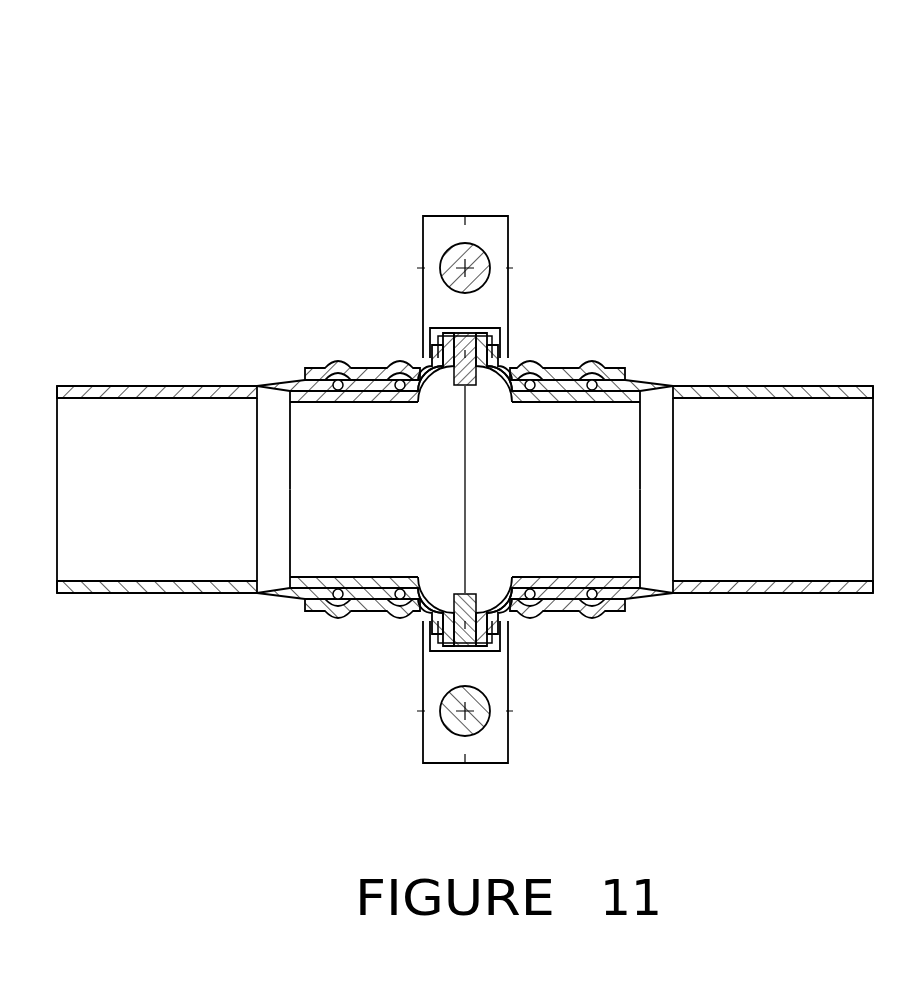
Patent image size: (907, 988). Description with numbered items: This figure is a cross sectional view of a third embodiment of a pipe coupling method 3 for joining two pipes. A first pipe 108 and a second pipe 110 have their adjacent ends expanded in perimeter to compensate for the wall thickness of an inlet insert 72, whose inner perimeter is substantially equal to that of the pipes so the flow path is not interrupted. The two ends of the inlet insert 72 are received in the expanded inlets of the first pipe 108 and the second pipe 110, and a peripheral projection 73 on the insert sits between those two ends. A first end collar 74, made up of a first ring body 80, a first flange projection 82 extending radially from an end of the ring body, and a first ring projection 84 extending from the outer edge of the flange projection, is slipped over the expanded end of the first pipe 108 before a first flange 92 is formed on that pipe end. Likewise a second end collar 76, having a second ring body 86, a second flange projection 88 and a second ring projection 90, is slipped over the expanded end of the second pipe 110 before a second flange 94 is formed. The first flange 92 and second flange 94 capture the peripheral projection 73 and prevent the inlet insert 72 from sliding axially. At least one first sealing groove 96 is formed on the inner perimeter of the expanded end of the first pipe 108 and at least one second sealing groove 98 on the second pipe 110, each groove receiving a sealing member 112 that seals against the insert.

The pipe coupling method 3 is at (231, 165).
The inlet insert 72 is at (330, 578).
The peripheral projection 73 is at (457, 653).
The first end collar 74 is at (297, 341).
The second end collar 76 is at (632, 341).
The first ring body 80 is at (399, 358).
The first flange projection 82 is at (437, 330).
The first ring projection 84 is at (456, 330).
The second ring body 86 is at (570, 368).
The second flange projection 88 is at (501, 332).
The second ring projection 90 is at (483, 330).
The first flange 92 is at (452, 655).
The second flange 94 is at (503, 657).
The first sealing groove 96 is at (338, 357).
The second sealing groove 98 is at (535, 367).
The first pipe 108 is at (158, 387).
The second pipe 110 is at (762, 387).
The sealing member 112 is at (543, 617).